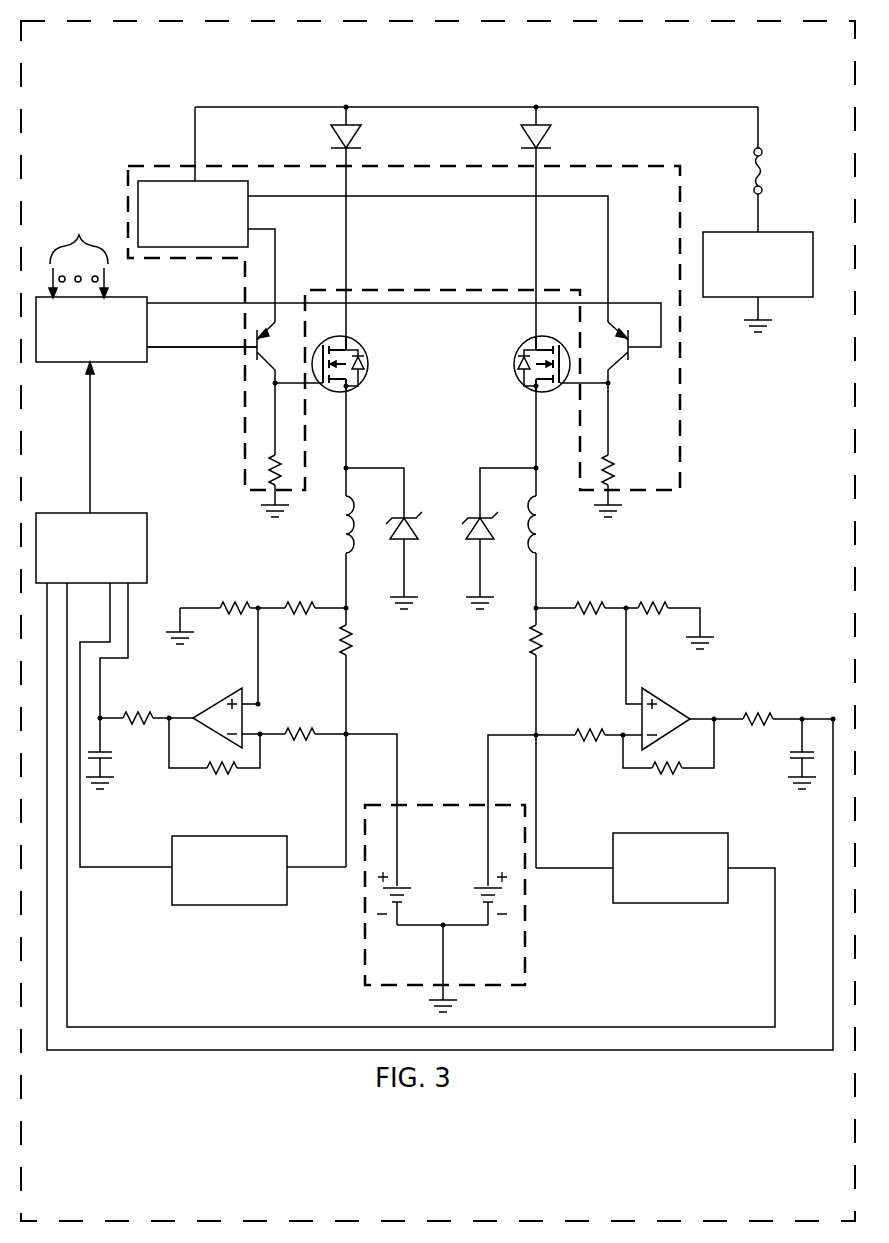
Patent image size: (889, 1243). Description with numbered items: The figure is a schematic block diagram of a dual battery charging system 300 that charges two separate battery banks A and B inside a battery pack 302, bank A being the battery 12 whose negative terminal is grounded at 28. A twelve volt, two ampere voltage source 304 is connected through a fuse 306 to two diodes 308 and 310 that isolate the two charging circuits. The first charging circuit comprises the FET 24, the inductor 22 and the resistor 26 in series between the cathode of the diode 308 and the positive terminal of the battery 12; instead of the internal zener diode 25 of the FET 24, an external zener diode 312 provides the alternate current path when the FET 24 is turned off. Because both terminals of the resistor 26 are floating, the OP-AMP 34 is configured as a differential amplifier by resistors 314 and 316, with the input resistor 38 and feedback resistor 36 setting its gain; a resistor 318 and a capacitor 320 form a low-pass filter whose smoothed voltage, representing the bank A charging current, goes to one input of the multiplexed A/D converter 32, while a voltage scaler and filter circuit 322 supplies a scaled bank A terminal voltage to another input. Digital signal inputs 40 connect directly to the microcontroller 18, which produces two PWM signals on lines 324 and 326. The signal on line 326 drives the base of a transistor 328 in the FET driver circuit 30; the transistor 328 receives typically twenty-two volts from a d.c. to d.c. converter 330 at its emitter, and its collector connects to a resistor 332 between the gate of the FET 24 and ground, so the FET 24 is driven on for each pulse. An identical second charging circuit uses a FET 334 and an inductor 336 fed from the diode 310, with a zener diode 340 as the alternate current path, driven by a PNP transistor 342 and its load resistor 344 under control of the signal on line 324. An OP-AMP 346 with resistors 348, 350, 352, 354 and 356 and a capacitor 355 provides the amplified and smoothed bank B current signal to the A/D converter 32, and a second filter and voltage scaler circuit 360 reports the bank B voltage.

The battery charging system 300 is at (136, 92).
The FET driver circuit 30 is at (128, 178).
The digital signal inputs 40 is at (112, 281).
The microcontroller 18 is at (100, 362).
The A/D converter 32 is at (110, 513).
The PWM signal output line 324 is at (190, 302).
The PWM signal output line 326 is at (212, 348).
The transistor 328 is at (250, 356).
The d.c. to d.c. converter 330 is at (252, 210).
The resistor 332 is at (268, 488).
The diode 308 is at (362, 137).
The diode 310 is at (521, 137).
The fuse 306 is at (764, 168).
The voltage source 304 is at (768, 232).
The FET 24 is at (355, 342).
The internal zener diode 25 is at (362, 364).
The FET 334 is at (527, 342).
The PNP transistor 342 is at (628, 352).
The load resistor 344 is at (612, 484).
The inductor 22 is at (354, 520).
The external zener diode 312 is at (393, 515).
The zener diode 340 is at (492, 515).
The inductor 336 is at (536, 518).
The resistor 316 is at (235, 602).
The resistor 314 is at (296, 612).
The resistor 26 is at (354, 640).
The operational amplifier 34 is at (224, 700).
The resistor 318 is at (134, 724).
The capacitor 320 is at (110, 766).
The feedback resistor 36 is at (222, 772).
The input resistor 38 is at (298, 745).
The voltage scaler and filter circuit 322 is at (192, 905).
The resistor 348 is at (596, 612).
The resistor 350 is at (650, 604).
The operational amplifier 346 is at (662, 696).
The resistor 352 is at (591, 745).
The resistor 354 is at (670, 772).
The resistor 356 is at (758, 728).
The capacitor 355 is at (790, 762).
The filter and voltage scaler circuit 360 is at (633, 903).
The battery 12 is at (409, 905).
The battery pack 302 is at (527, 962).
The ground 28 is at (455, 1006).